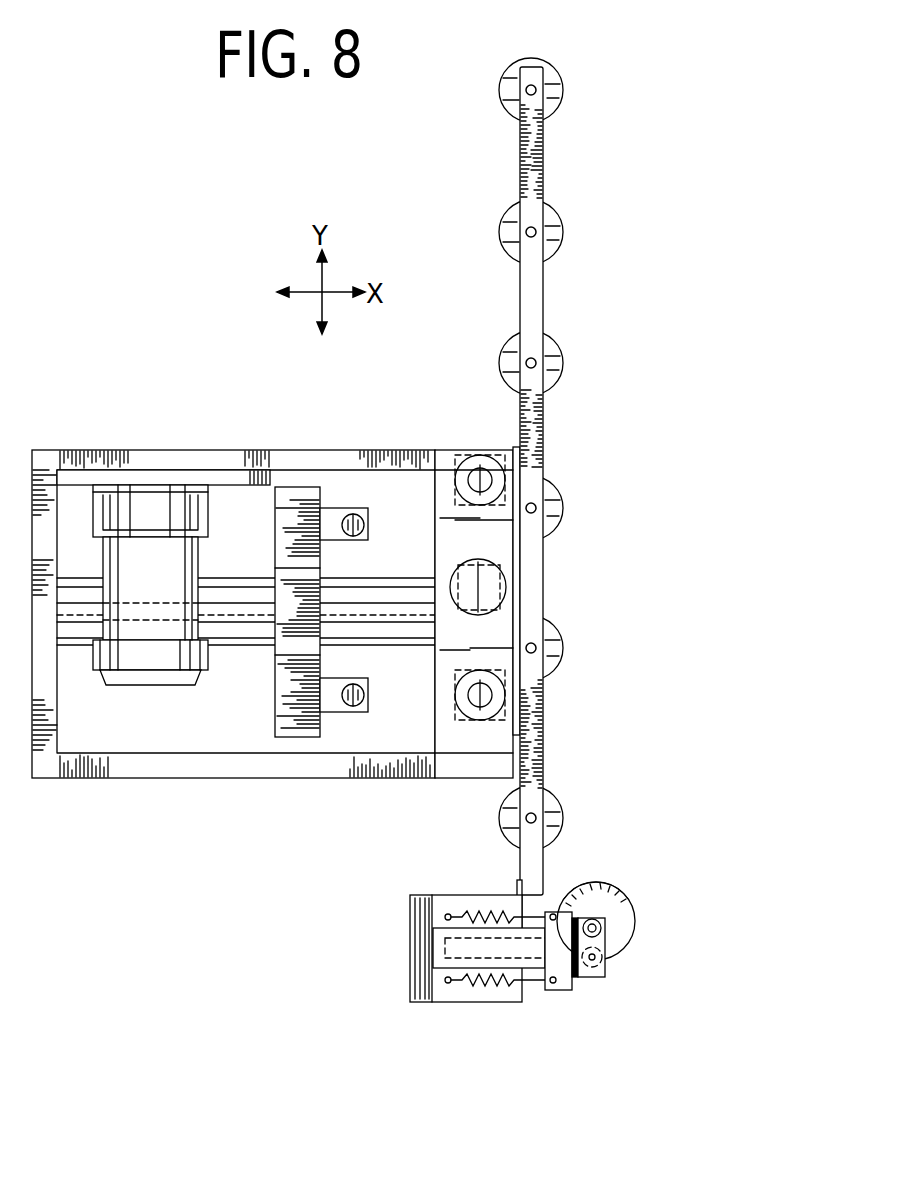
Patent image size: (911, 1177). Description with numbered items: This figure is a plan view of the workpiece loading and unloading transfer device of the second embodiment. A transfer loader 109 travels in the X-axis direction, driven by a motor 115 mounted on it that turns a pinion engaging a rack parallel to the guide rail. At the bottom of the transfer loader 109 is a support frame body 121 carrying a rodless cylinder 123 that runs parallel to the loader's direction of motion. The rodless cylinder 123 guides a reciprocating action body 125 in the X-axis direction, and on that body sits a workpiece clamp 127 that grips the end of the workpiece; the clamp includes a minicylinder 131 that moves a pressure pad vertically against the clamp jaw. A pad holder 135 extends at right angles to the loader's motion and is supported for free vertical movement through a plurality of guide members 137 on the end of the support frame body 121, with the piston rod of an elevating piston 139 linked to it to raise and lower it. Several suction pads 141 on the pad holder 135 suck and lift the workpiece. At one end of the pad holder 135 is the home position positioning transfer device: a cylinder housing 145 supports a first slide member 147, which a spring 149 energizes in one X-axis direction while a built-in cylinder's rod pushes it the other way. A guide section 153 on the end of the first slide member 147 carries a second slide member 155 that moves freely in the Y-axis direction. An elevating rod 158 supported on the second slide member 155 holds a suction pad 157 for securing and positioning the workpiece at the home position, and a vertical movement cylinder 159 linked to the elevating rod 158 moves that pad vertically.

The transfer loader 109 is at (245, 477).
The motor 115 is at (140, 495).
The support frame body 121 is at (165, 778).
The rodless cylinder 123 is at (252, 630).
The reciprocating action body 125 is at (286, 582).
The workpiece clamp 127 is at (336, 508).
The minicylinder 131 is at (358, 519).
The pad holder 135 is at (543, 575).
The guide members 137 is at (463, 463).
The elevating piston 139 is at (452, 584).
The suction pads 141 is at (560, 668).
The cylinder housing 145 is at (420, 961).
The first slide member 147 is at (439, 931).
The spring 149 is at (480, 914).
The guide section 153 is at (560, 989).
The second slide member 155 is at (606, 940).
The suction pad 157 is at (606, 922).
The elevating rod 158 is at (600, 889).
The vertical movement cylinder 159 is at (598, 963).